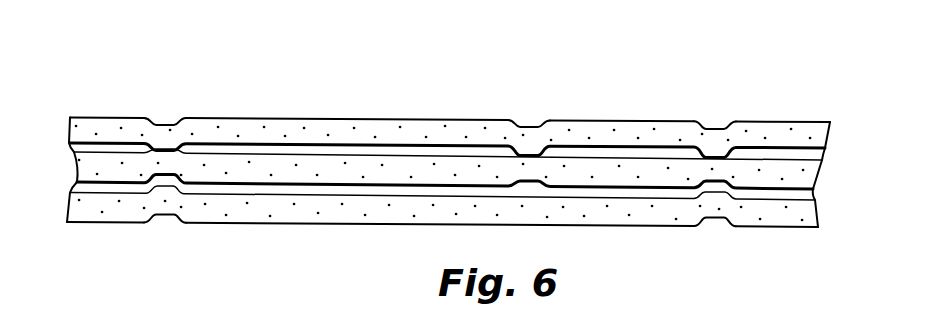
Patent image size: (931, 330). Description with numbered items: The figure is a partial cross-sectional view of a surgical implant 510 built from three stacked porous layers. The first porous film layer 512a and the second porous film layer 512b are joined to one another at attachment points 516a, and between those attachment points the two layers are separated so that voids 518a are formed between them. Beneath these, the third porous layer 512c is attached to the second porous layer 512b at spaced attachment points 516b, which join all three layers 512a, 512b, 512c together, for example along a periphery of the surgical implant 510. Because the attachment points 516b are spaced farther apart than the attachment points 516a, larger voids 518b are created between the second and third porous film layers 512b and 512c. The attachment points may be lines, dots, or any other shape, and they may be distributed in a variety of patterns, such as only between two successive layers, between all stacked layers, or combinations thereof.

The surgical implant 510 is at (163, 68).
The first porous film layer 512a is at (597, 133).
The second porous film layer 512b is at (643, 173).
The third porous layer 512c is at (628, 212).
The attachment points 516a is at (347, 148).
The spaced attachment points 516b is at (163, 216).
The voids 518a is at (207, 155).
The larger voids 518b is at (392, 190).